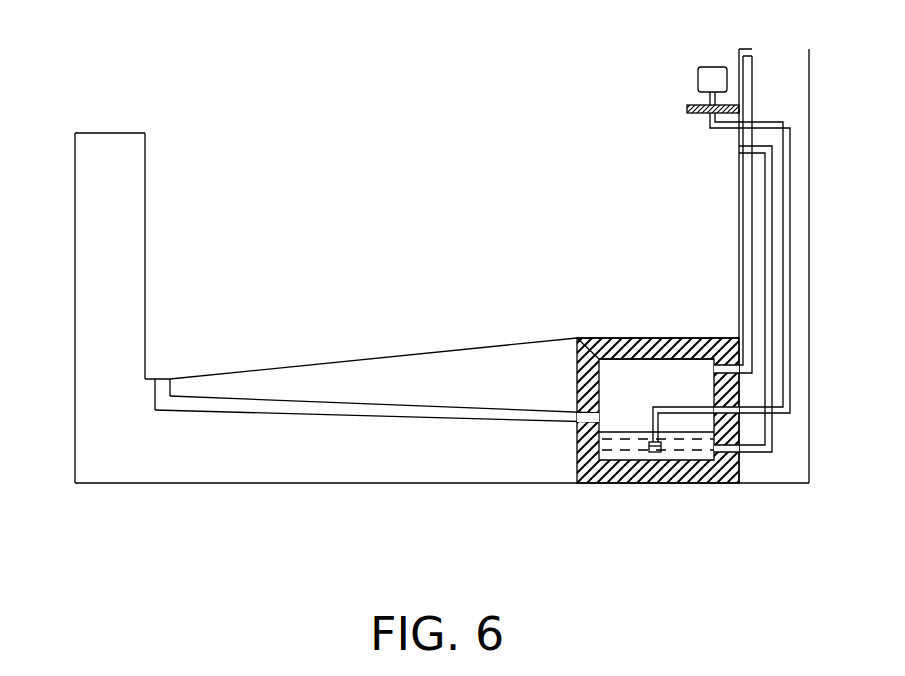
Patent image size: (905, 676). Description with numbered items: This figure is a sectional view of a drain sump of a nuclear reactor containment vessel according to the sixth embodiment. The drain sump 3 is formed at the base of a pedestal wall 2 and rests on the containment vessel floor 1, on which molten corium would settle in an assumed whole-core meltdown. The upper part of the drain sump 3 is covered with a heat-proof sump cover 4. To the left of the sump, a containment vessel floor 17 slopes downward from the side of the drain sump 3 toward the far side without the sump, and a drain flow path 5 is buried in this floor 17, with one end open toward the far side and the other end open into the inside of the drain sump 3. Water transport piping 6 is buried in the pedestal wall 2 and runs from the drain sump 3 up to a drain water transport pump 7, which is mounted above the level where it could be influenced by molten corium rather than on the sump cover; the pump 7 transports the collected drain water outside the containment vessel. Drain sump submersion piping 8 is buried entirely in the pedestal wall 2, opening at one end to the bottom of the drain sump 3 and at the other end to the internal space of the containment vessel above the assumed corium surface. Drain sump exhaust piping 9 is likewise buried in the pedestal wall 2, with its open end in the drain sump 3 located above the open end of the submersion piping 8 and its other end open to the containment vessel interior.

The containment vessel floor 1 is at (213, 472).
The pedestal wall 2 is at (800, 268).
The drain sump 3 is at (625, 388).
The heat-proof sump cover 4 is at (617, 340).
The drain flow path 5 is at (153, 395).
The water transport piping 6 is at (790, 330).
The drain water transport pump 7 is at (698, 75).
The drain sump submersion piping 8 is at (773, 437).
The drain sump exhaust piping 9 is at (748, 52).
The containment vessel floor 17 is at (367, 362).